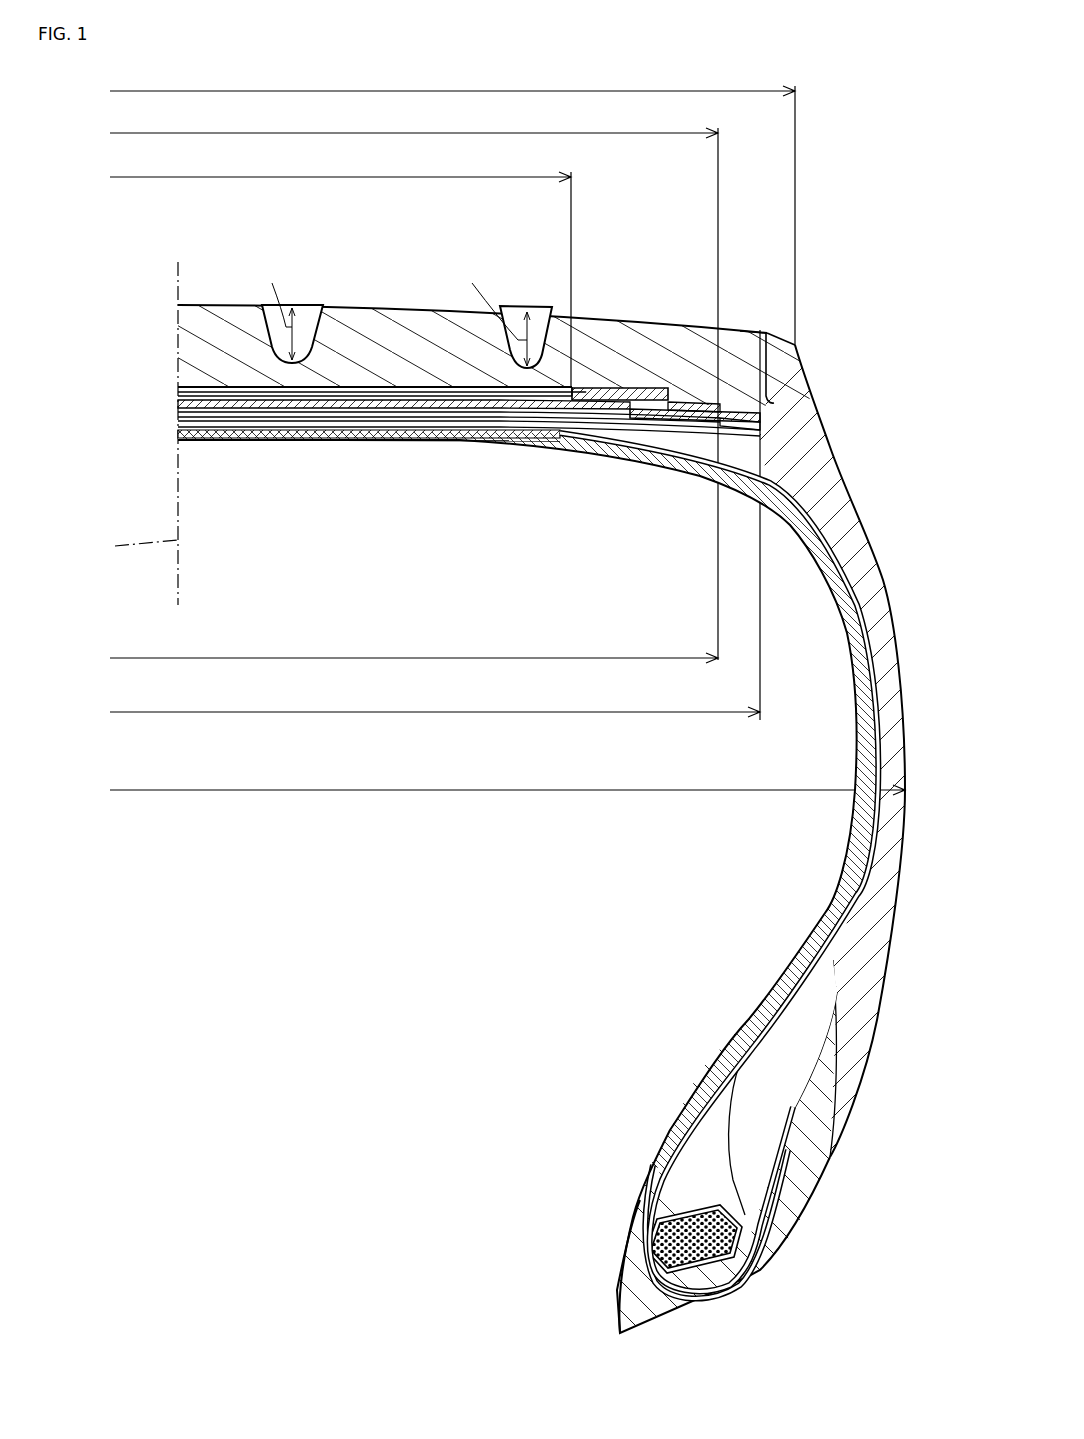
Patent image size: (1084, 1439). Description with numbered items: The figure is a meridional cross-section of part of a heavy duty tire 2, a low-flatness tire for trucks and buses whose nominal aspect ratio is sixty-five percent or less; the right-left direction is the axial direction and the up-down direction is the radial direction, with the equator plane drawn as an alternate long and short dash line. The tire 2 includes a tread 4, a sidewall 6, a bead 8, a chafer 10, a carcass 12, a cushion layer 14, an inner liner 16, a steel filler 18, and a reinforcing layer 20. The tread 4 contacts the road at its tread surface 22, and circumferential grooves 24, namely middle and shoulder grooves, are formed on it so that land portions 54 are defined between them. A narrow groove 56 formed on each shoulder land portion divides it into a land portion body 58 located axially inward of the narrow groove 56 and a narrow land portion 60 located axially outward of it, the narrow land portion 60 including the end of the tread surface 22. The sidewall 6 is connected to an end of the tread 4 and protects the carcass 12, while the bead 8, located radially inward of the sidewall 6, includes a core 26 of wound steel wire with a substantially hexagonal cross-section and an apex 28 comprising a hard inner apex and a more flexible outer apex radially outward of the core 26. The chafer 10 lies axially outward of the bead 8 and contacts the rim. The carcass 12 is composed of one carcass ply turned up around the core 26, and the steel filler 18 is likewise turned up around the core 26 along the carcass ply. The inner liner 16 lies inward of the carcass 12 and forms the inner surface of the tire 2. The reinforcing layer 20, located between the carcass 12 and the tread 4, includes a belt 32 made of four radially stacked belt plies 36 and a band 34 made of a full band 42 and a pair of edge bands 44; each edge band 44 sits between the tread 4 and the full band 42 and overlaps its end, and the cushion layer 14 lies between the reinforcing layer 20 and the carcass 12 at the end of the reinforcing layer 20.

The heavy duty tire 2 is at (843, 222).
The tread 4 is at (757, 332).
The sidewall 6 is at (893, 620).
The bead 8 is at (505, 1095).
The chafer 10 is at (787, 1225).
The carcass 12 is at (496, 444).
The cushion layer 14 is at (798, 545).
The inner liner 16 is at (543, 460).
The steel filler 18 is at (768, 1187).
The reinforcing layer 20 is at (210, 438).
The tread surface 22 is at (340, 304).
The circumferential groove 24 is at (504, 304).
The core 26 is at (650, 1250).
The apex 28 is at (742, 1128).
The belt 32 is at (463, 518).
The band 34 is at (642, 518).
The belt ply 36 is at (270, 431).
The full band 42 is at (578, 392).
The edge band 44 is at (628, 445).
The land portion 54 is at (650, 266).
The narrow groove 56 is at (770, 333).
The land portion body 58 is at (746, 330).
The narrow land portion 60 is at (788, 342).